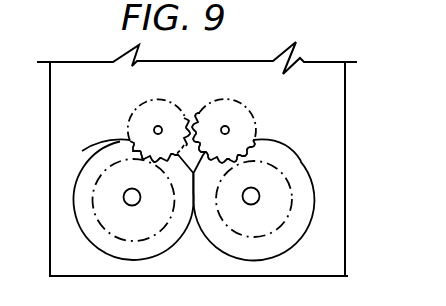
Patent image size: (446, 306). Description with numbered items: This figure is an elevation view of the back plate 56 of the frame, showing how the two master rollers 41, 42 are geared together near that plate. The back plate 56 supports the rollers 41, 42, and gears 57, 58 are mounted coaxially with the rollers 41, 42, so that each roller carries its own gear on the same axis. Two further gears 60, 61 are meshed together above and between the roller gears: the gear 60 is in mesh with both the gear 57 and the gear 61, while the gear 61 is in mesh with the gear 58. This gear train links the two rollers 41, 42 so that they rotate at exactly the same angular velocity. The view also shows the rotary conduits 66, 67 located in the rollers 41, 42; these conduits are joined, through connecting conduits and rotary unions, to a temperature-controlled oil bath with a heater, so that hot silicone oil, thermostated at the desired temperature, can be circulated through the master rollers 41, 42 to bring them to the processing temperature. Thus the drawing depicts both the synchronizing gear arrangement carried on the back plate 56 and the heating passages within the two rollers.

The roller 41 is at (95, 243).
The roller 42 is at (291, 238).
The back plate 56 is at (333, 127).
The gear 57 is at (97, 152).
The gear 58 is at (286, 150).
The gear 60 is at (130, 127).
The gear 61 is at (257, 138).
The rotary conduit 66 is at (128, 205).
The rotary conduit 67 is at (247, 204).